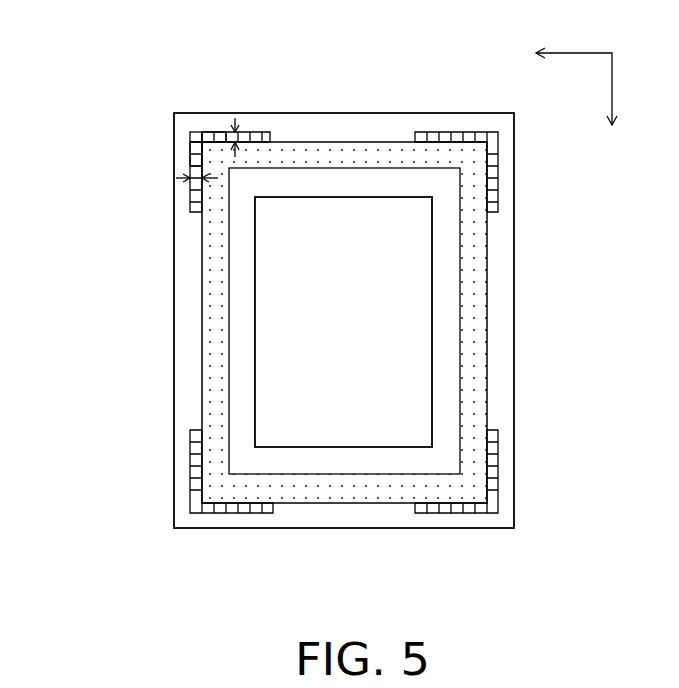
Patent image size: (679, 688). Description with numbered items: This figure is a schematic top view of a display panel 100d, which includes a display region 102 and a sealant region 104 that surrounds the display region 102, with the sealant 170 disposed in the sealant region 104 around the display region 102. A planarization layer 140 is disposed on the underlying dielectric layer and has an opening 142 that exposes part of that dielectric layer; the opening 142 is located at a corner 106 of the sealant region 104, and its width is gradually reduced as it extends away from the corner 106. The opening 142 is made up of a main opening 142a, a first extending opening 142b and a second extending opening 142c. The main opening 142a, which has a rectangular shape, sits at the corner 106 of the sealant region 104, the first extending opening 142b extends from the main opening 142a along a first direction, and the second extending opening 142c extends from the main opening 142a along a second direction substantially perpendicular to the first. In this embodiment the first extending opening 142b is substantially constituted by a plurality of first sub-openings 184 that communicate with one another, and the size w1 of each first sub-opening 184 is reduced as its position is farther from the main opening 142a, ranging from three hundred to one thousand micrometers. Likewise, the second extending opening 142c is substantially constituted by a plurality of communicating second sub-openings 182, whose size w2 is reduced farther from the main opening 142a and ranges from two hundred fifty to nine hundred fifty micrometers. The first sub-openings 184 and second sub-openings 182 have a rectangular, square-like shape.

The display panel 100d is at (605, 568).
The display region 102 is at (315, 197).
The sealant region 104 is at (365, 142).
The corner 106 is at (490, 134).
The planarization layer 140 is at (502, 264).
The opening 142 is at (290, 263).
The main opening 142a is at (195, 142).
The first extending opening 142b is at (287, 67).
The second extending opening 142c is at (128, 228).
The sealant 170 is at (470, 302).
The second sub-openings 182 is at (190, 157).
The first sub-openings 184 is at (221, 135).
The size of first sub-openings w1 is at (255, 138).
The size of second sub-openings w2 is at (190, 212).